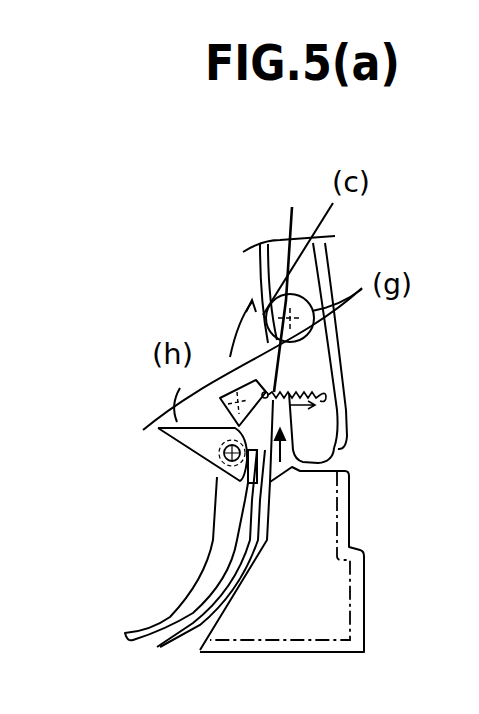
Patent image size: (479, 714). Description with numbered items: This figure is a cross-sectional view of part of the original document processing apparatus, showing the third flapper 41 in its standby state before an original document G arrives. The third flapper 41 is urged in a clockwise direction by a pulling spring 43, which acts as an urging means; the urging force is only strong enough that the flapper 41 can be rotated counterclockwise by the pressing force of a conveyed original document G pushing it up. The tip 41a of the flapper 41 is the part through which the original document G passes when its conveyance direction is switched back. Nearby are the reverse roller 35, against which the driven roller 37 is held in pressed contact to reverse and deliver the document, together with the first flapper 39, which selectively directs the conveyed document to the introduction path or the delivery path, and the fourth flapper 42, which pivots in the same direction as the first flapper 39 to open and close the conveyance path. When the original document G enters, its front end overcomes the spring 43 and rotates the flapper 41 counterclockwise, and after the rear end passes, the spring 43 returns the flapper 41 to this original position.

The reverse roller 35 is at (160, 413).
The driven roller 37 is at (312, 349).
The first flapper 39 is at (208, 562).
The third flapper 41 is at (290, 390).
The tip of the flapper 41a is at (288, 279).
The fourth flapper 42 is at (197, 437).
The pulling spring 43 is at (343, 380).
The original document G is at (186, 625).